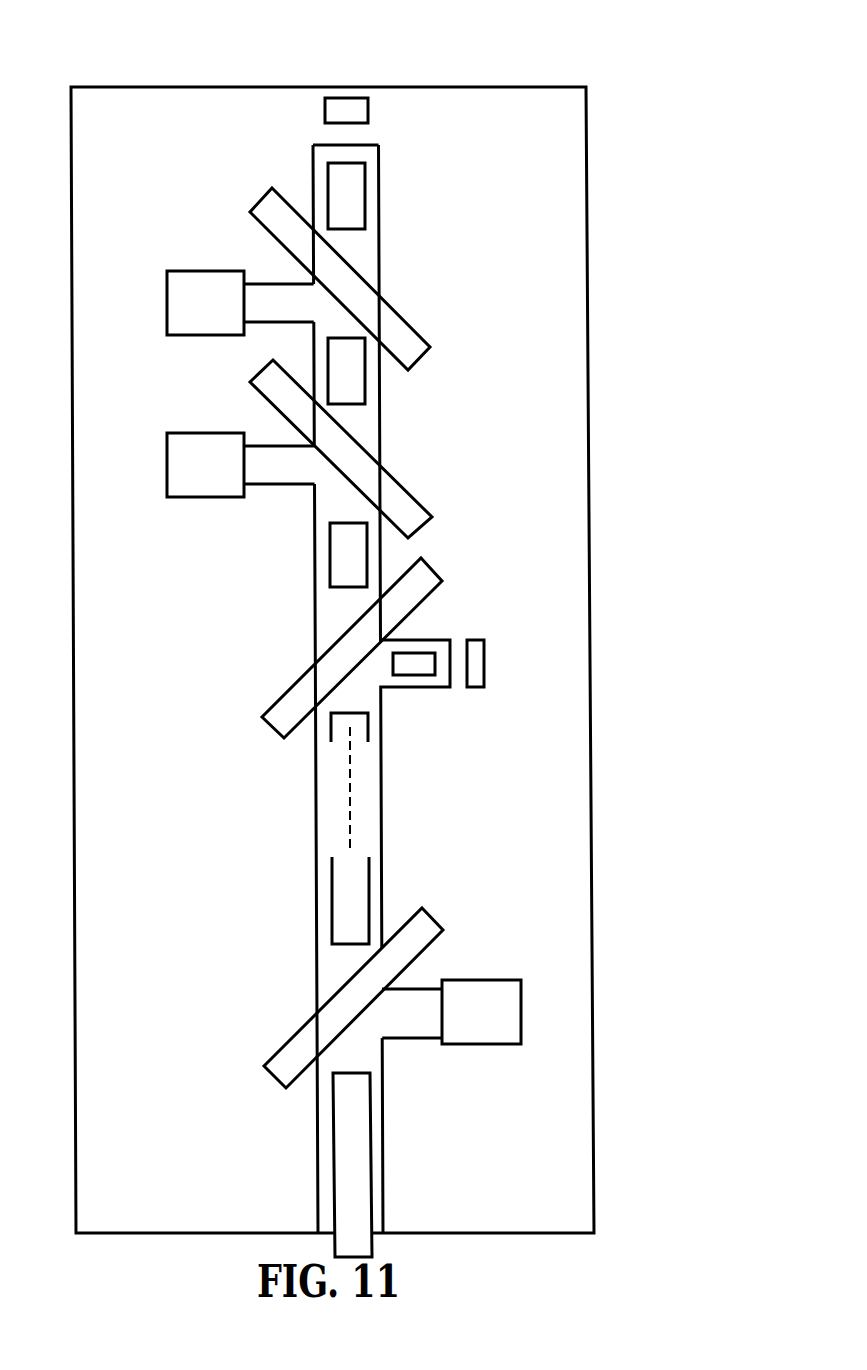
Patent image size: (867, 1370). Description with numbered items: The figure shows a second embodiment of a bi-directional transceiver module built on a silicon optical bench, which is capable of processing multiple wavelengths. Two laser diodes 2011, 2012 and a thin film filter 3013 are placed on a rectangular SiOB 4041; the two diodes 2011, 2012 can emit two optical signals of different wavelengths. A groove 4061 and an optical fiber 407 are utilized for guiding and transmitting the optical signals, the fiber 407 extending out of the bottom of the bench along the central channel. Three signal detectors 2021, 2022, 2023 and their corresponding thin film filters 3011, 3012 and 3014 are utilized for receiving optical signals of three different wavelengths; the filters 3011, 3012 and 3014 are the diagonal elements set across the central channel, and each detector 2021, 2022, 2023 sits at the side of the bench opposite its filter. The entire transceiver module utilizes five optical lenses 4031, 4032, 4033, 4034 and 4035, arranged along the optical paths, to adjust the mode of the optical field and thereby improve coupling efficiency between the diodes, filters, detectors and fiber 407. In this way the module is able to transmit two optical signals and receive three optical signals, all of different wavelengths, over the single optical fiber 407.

The laser diode 2011 is at (359, 110).
The laser diode 2012 is at (475, 658).
The signal detector 2021 is at (195, 287).
The signal detector 2022 is at (182, 470).
The signal detector 2023 is at (492, 993).
The thin film filter 3011 is at (400, 332).
The thin film filter 3012 is at (400, 510).
The thin film filter 3013 is at (295, 695).
The thin film filter 3014 is at (288, 1042).
The optical lens 4031 is at (357, 202).
The optical lens 4032 is at (352, 398).
The optical lens 4033 is at (342, 555).
The optical lens 4034 is at (352, 805).
The optical lens 4035 is at (403, 670).
The rectangular SiOB 4041 is at (560, 750).
The groove 4061 is at (375, 893).
The optical fiber 407 is at (358, 1168).